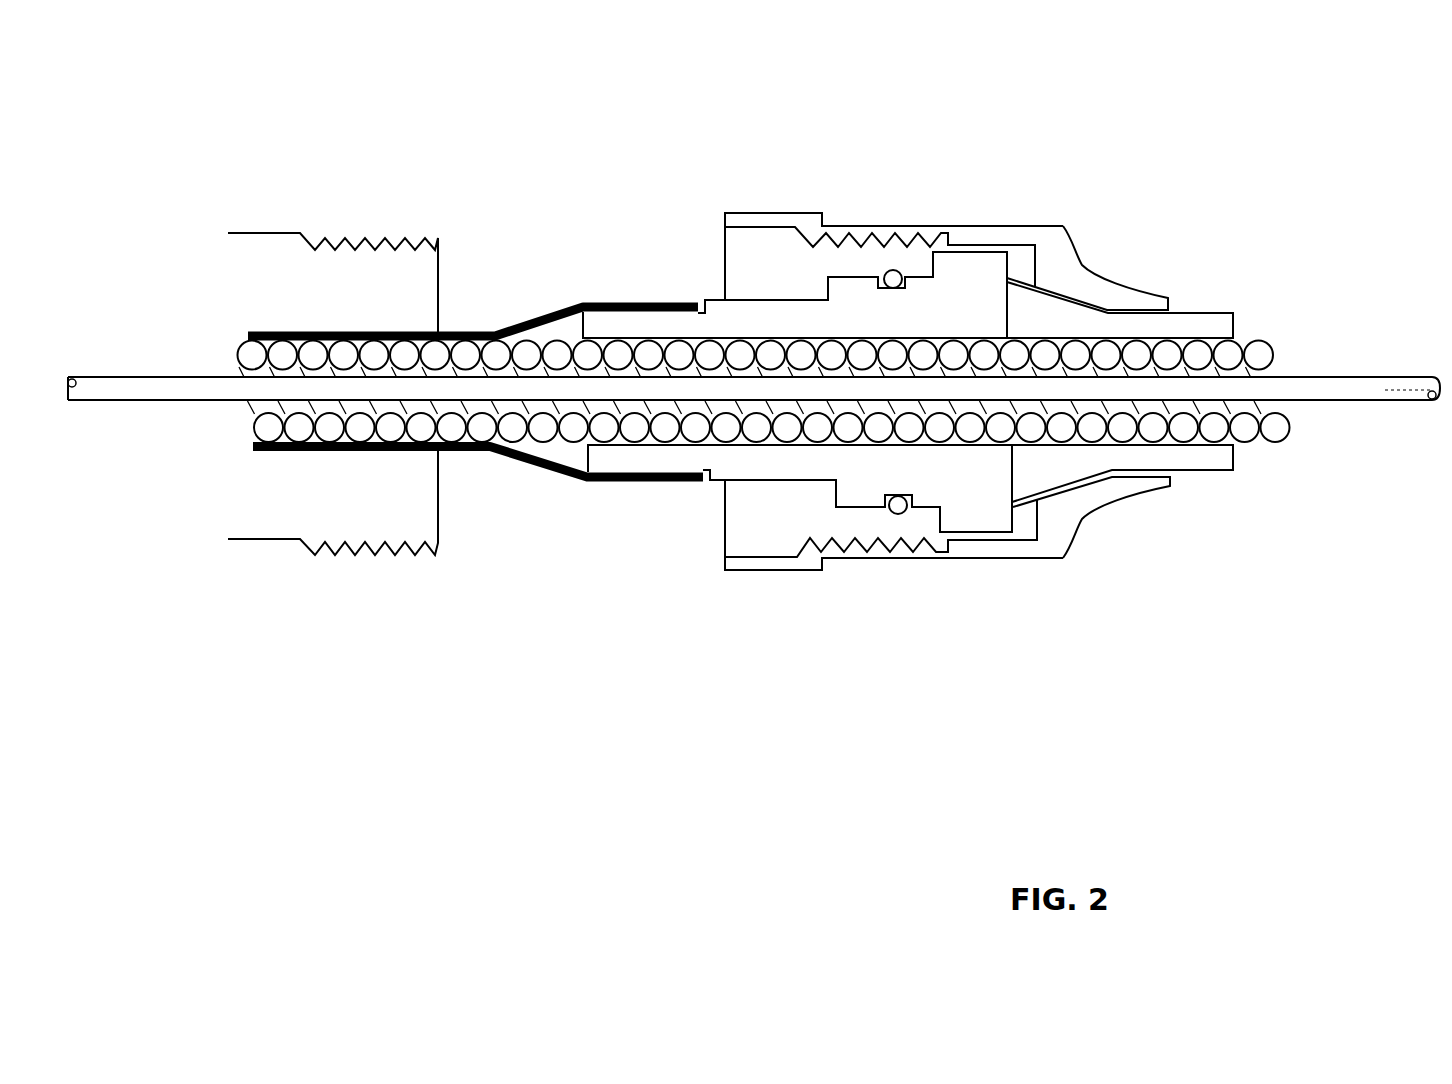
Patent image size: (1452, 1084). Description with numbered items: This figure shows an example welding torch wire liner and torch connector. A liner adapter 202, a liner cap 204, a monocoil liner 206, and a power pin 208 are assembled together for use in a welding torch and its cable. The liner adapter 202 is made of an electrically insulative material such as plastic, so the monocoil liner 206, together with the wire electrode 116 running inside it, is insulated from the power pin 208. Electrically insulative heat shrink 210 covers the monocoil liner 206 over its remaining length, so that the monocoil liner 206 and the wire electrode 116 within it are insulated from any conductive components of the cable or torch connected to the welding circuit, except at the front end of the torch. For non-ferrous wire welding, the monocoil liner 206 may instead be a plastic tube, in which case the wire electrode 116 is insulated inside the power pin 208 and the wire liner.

The wire electrode 116 is at (1308, 374).
The liner adapter 202 is at (986, 298).
The liner cap 204 is at (1067, 267).
The monocoil liner 206 is at (562, 350).
The power pin 208 is at (275, 232).
The electrically insulative heat shrink 210 is at (646, 300).